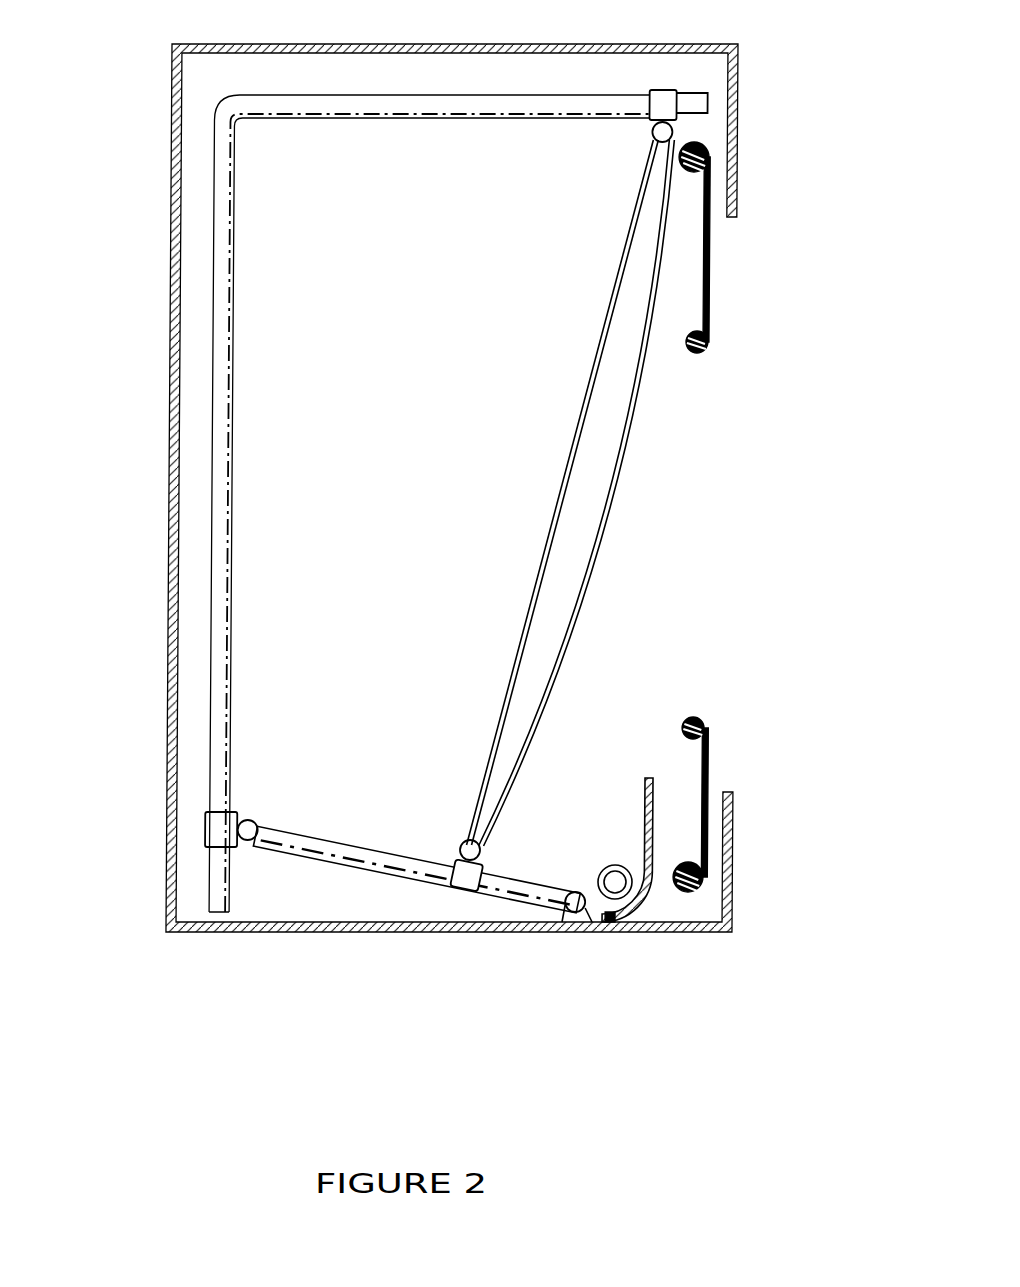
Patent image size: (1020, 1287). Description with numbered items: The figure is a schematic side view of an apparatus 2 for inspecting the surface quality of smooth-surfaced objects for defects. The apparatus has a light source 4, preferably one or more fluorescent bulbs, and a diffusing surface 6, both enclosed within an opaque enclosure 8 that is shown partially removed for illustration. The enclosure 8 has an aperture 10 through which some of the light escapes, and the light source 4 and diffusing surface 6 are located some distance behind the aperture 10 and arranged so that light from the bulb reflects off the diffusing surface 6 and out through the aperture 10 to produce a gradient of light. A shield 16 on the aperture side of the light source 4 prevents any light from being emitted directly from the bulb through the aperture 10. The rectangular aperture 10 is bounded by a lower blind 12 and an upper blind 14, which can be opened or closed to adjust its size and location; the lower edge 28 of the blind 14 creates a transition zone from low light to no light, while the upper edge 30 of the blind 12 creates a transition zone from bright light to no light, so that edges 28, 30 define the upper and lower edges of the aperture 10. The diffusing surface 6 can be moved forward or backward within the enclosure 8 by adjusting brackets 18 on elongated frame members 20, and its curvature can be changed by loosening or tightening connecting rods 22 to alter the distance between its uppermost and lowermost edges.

The inspection apparatus 2 is at (118, 332).
The light source 4 is at (621, 888).
The diffusing surface 6 is at (640, 387).
The opaque enclosure 8 is at (214, 538).
The aperture 10 is at (723, 498).
The blind 12 is at (783, 758).
The blind 14 is at (785, 271).
The shield 16 is at (657, 895).
The bracket 18 is at (466, 888).
The elongated frame member 20 is at (320, 855).
The connecting rod 22 is at (583, 421).
The lower edge of blind 28 is at (706, 348).
The upper edge of blind 30 is at (711, 720).